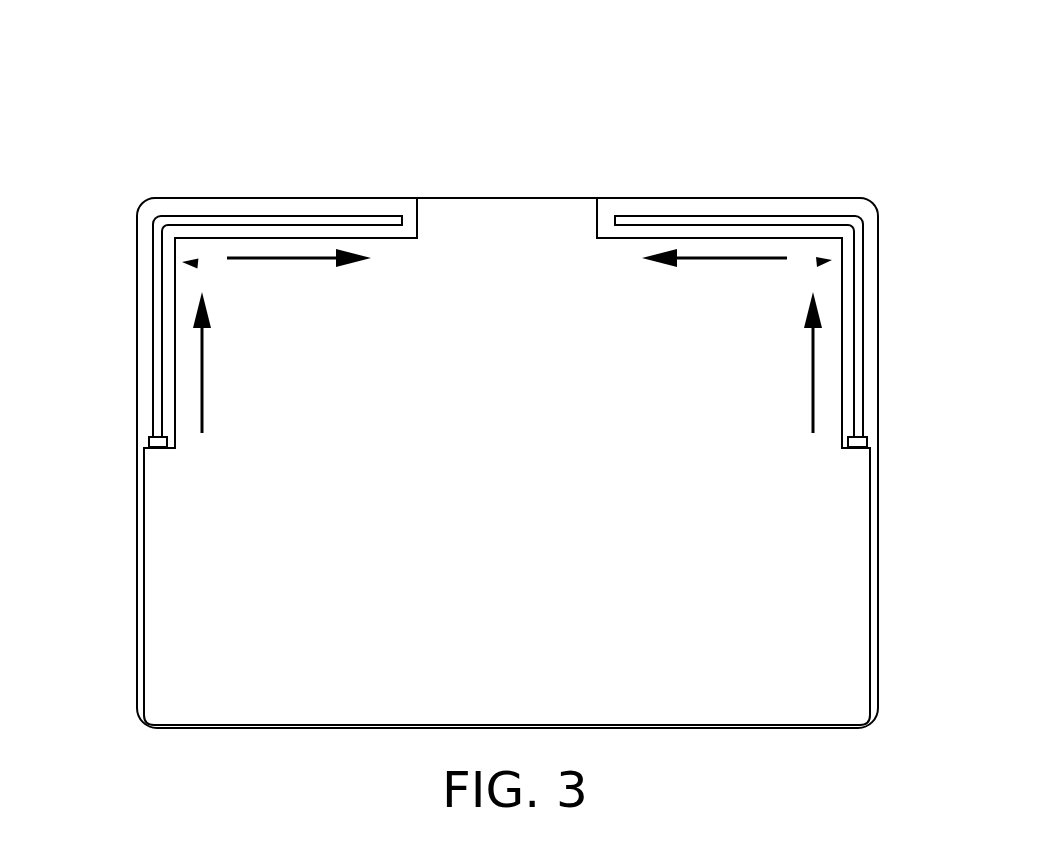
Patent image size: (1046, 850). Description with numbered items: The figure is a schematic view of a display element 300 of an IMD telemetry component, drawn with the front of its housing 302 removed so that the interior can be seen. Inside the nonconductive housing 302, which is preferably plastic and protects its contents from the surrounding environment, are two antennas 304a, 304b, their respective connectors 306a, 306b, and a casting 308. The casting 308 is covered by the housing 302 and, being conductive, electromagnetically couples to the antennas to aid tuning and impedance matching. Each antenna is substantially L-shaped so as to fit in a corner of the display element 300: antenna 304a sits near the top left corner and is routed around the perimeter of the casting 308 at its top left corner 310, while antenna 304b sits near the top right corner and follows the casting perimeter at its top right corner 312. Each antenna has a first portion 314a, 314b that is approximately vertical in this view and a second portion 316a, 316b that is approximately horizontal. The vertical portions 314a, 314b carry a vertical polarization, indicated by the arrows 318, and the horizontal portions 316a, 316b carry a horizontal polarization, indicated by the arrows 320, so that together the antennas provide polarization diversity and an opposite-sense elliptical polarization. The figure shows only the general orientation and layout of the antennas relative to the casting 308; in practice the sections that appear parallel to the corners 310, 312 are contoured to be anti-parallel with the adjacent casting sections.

The display element 300 is at (542, 74).
The housing 302 is at (880, 228).
The antenna 304a is at (167, 217).
The antenna 304b is at (802, 223).
The connector 306a is at (142, 440).
The connector 306b is at (866, 434).
The casting 308 is at (486, 237).
The top left corner 310 is at (198, 264).
The top right corner 312 is at (816, 262).
The first portion 314a is at (133, 322).
The first portion 314b is at (883, 310).
The second portion 316a is at (355, 201).
The second portion 316b is at (680, 201).
The arrows 318 is at (203, 410).
The arrows 320 is at (290, 262).